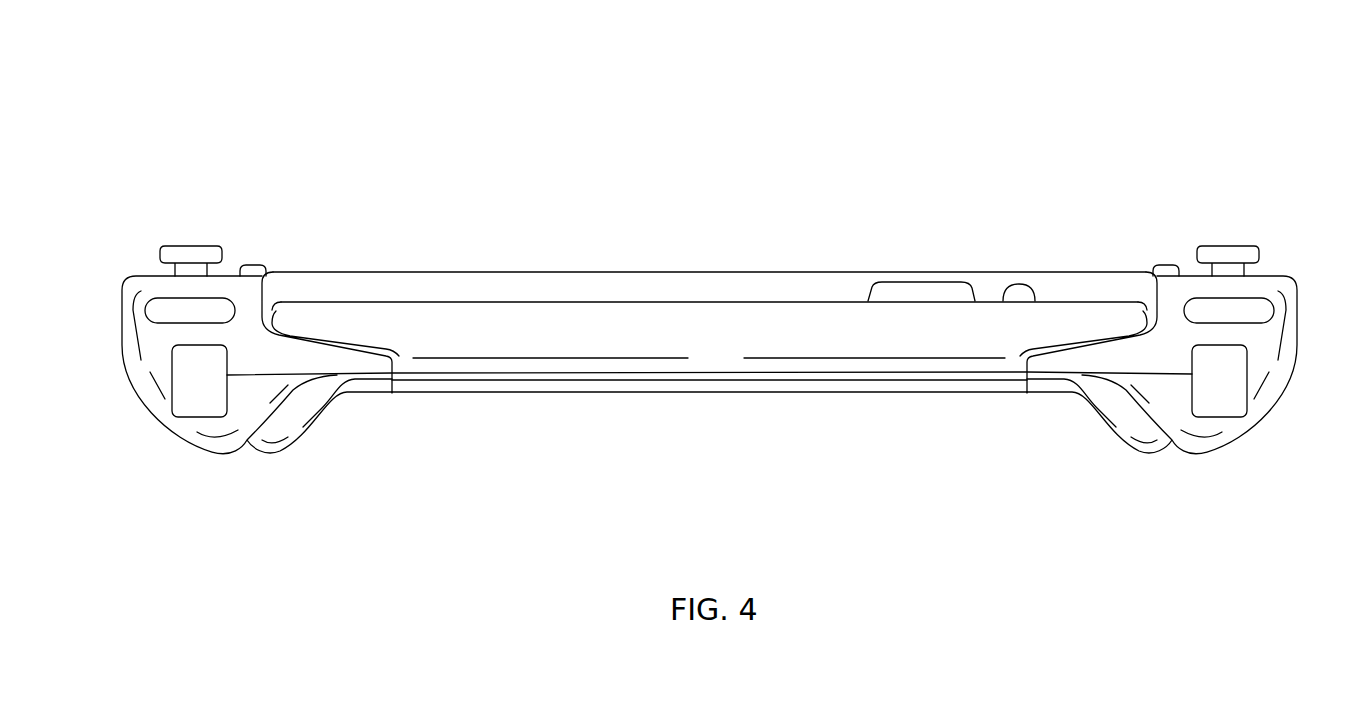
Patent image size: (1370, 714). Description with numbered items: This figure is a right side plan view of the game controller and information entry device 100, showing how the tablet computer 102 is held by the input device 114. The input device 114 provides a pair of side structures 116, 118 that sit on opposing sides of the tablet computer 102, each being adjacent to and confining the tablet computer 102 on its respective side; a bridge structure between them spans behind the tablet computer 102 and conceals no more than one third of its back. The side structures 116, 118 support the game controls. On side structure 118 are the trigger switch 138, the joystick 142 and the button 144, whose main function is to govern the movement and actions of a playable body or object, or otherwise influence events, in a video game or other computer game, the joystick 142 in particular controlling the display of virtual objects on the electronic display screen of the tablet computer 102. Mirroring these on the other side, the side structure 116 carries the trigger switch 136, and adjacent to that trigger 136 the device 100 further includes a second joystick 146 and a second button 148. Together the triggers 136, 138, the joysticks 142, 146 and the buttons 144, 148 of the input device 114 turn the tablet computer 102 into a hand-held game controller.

The game controller and information entry device 100 is at (719, 271).
The tablet computer 102 is at (664, 268).
The input device 114 is at (752, 394).
The side structure 116 is at (1153, 395).
The side structure 118 is at (247, 410).
The trigger switch 136 is at (1232, 390).
The trigger switch 138 is at (200, 398).
The joystick 142 is at (178, 238).
The button 144 is at (168, 315).
The second joystick 146 is at (1238, 235).
The second button 148 is at (1253, 312).